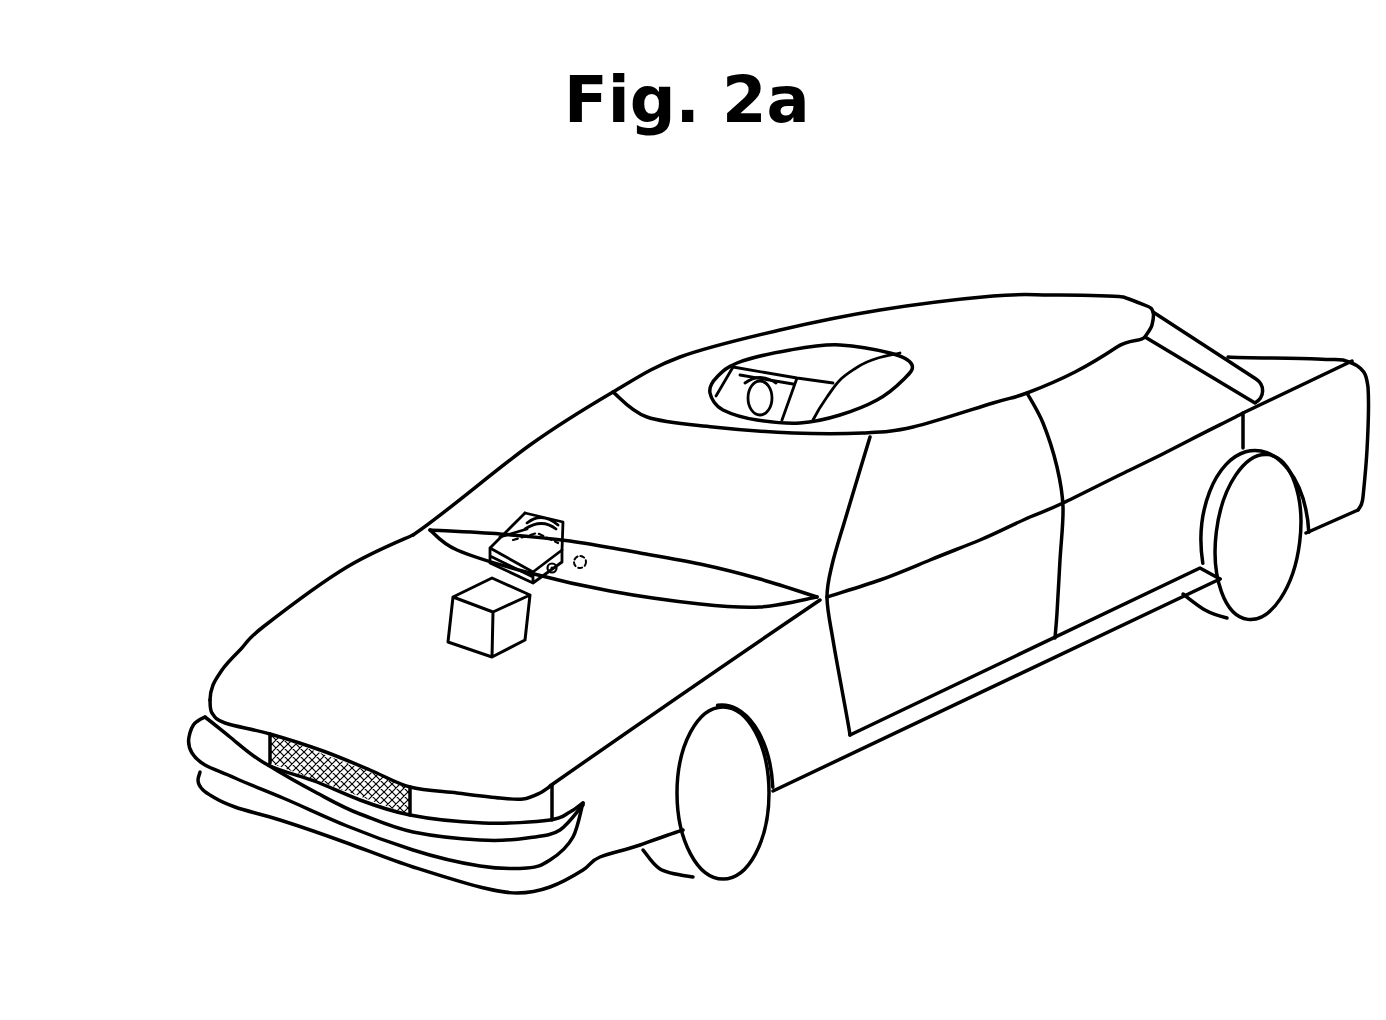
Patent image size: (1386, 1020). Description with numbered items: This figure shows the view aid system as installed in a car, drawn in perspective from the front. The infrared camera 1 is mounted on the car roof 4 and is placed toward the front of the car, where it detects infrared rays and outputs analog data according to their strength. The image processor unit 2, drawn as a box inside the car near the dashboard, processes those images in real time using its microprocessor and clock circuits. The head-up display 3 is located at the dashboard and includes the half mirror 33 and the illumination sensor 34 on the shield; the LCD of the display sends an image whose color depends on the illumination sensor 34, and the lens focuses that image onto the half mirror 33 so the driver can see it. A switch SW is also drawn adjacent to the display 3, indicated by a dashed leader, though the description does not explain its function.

The infrared camera 1 is at (771, 371).
The image processor unit 2 is at (473, 640).
The head-up display 3 is at (490, 550).
The half mirror 33 is at (527, 510).
The illumination sensor 34 is at (548, 572).
The car roof 4 is at (312, 607).
The switch SW is at (577, 550).